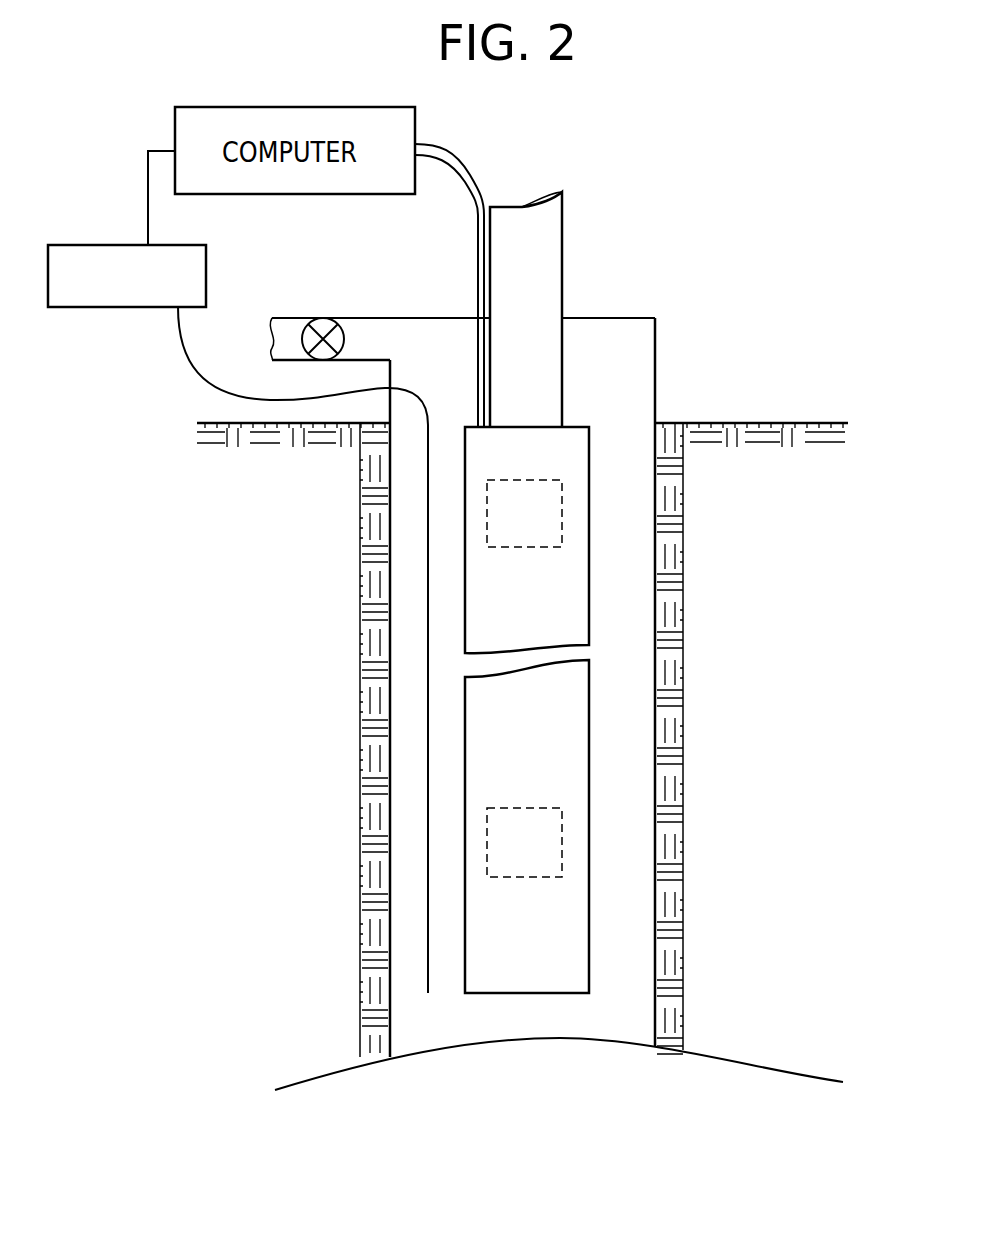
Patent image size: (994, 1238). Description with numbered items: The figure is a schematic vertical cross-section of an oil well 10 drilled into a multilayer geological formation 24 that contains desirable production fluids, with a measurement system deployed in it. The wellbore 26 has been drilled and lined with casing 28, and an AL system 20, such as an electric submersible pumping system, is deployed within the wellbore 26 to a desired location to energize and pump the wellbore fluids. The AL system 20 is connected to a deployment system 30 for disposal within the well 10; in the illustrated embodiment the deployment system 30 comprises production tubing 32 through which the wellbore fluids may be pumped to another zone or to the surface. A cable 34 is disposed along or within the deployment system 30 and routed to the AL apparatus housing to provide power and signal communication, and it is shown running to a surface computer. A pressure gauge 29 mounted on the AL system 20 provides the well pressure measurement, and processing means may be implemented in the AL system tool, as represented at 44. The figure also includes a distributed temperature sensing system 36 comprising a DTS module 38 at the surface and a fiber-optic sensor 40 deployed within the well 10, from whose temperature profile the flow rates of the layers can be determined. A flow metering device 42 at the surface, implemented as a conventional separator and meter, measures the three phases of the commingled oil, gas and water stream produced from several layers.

The well 10 is at (620, 612).
The AL system 20 is at (630, 419).
The geological formation 24 is at (297, 524).
The wellbore 26 is at (630, 877).
The casing 28 is at (388, 895).
The pressure gauge 29 is at (537, 854).
The deployment system 30 is at (567, 425).
The production tubing 32 is at (540, 266).
The cable 34 is at (458, 152).
The distributed temperature sensing (DTS) system 36 is at (166, 326).
The DTS module 38 is at (206, 258).
The fiber-optic sensor 40 is at (428, 645).
The flow metering device 42 is at (340, 322).
The processing means in AL system tool 44 is at (537, 527).